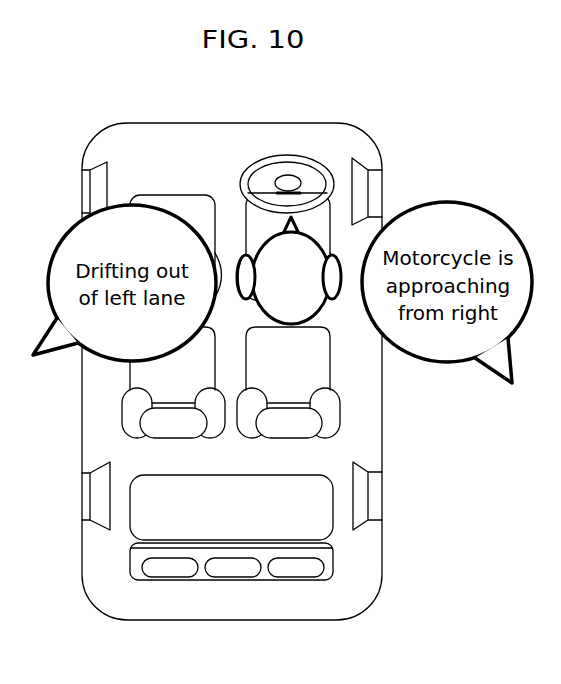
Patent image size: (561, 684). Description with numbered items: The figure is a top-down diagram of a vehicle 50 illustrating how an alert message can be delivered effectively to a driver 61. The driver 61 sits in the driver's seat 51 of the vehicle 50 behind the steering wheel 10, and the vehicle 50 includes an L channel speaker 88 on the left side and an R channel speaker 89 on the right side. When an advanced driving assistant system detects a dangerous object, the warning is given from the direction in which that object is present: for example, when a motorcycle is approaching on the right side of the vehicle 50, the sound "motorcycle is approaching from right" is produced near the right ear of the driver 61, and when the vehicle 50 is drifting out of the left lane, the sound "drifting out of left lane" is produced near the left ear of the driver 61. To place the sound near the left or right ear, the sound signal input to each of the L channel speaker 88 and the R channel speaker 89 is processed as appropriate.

The steering wheel 10 is at (288, 156).
The vehicle 50 is at (383, 548).
The driver's seat 51 is at (330, 240).
The driver 61 is at (317, 312).
The L channel speaker 88 is at (110, 162).
The R channel speaker 89 is at (350, 163).